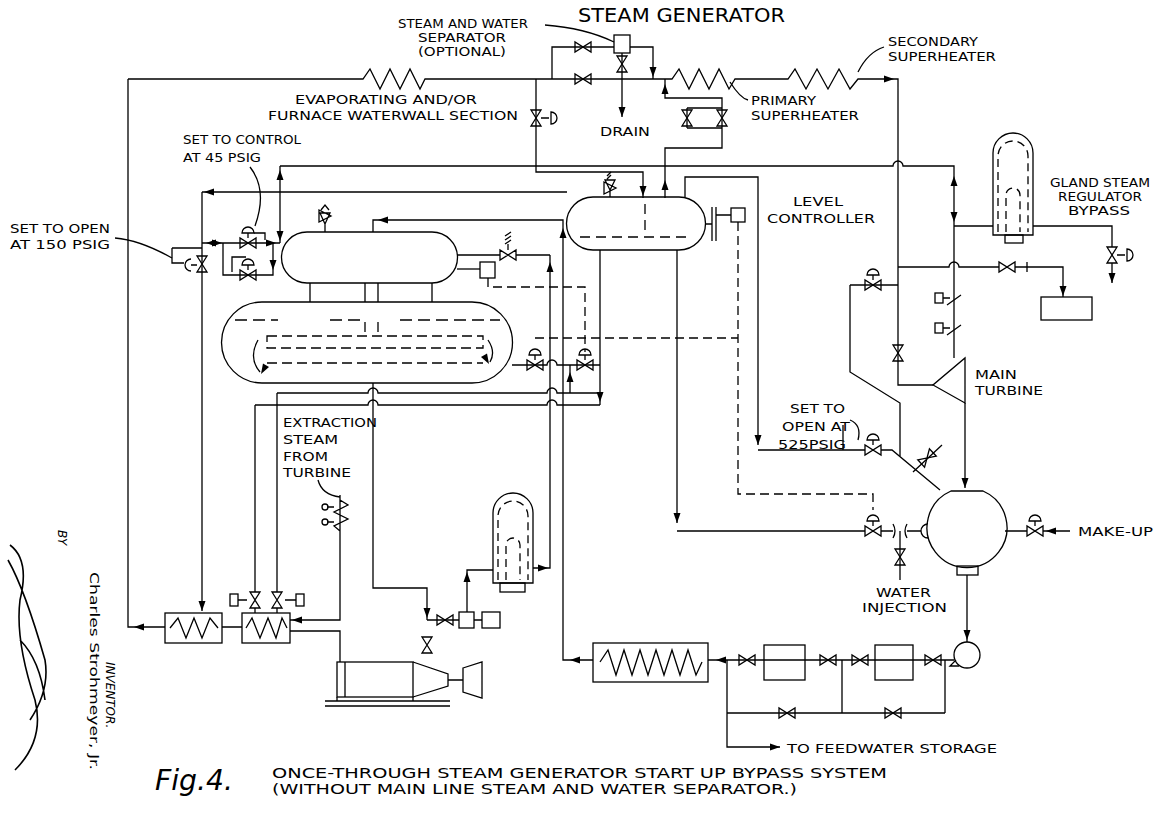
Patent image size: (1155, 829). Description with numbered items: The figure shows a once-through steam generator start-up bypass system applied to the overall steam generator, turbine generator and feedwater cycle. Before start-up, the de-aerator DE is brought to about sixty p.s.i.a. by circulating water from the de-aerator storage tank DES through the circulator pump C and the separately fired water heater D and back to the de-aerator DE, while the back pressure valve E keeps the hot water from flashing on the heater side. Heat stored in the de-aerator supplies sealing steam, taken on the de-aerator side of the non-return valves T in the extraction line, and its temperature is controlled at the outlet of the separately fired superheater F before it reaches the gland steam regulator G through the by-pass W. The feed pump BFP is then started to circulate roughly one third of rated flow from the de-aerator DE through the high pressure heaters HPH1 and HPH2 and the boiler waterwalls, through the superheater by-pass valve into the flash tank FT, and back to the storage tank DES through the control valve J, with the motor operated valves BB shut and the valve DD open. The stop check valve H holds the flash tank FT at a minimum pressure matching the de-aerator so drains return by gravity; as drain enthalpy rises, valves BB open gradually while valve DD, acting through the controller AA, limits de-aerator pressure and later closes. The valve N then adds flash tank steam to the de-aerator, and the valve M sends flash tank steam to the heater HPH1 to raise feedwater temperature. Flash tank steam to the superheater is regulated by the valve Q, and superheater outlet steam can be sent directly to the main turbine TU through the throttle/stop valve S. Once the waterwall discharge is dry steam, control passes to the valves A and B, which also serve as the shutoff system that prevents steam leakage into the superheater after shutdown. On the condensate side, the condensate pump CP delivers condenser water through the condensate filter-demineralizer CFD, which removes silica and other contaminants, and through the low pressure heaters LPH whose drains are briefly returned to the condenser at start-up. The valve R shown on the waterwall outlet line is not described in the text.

The throttling and shutoff valve A is at (581, 88).
The superheater control valve B is at (582, 55).
The waterwall outlet valve R is at (544, 124).
The de-aerator steam valve N is at (237, 236).
The flash tank steam valve M is at (187, 276).
The stop check valve H is at (246, 278).
The back pressure valve E is at (503, 245).
The controller AA is at (490, 272).
The control valve J is at (533, 368).
The de-aerator pressure valve DD is at (583, 368).
The superheater steam control valve Q is at (872, 279).
The throttle/stop valve S is at (887, 353).
The non-return valves T is at (935, 314).
The gland steam regulator by-pass W is at (1106, 256).
The separately fired superheater F is at (1052, 128).
The gland steam regulator G is at (1066, 327).
The separately fired water heater D is at (493, 515).
The circulator pump C is at (490, 615).
The motor operated valves BB is at (261, 593).
The de-aerator DE is at (370, 257).
The de-aerator storage tank DES is at (367, 342).
The flash tank FT is at (636, 223).
The main turbine TU is at (949, 380).
The condensate pump CP is at (965, 665).
The low pressure closed feedwater heaters LPH is at (650, 673).
The condensate filter-demineralizer CFD is at (838, 652).
The high pressure heater HPH1 is at (193, 638).
The high pressure heater HPH2 is at (266, 638).
The feed pump BFP is at (403, 684).